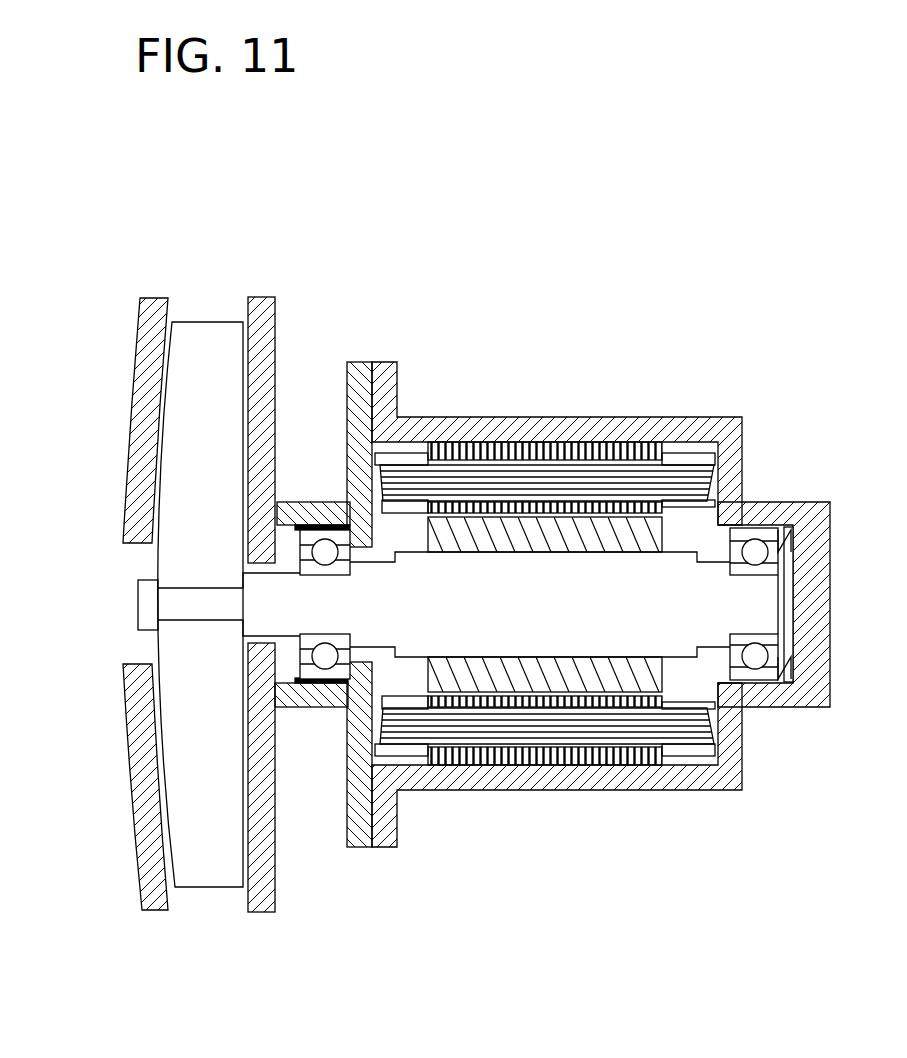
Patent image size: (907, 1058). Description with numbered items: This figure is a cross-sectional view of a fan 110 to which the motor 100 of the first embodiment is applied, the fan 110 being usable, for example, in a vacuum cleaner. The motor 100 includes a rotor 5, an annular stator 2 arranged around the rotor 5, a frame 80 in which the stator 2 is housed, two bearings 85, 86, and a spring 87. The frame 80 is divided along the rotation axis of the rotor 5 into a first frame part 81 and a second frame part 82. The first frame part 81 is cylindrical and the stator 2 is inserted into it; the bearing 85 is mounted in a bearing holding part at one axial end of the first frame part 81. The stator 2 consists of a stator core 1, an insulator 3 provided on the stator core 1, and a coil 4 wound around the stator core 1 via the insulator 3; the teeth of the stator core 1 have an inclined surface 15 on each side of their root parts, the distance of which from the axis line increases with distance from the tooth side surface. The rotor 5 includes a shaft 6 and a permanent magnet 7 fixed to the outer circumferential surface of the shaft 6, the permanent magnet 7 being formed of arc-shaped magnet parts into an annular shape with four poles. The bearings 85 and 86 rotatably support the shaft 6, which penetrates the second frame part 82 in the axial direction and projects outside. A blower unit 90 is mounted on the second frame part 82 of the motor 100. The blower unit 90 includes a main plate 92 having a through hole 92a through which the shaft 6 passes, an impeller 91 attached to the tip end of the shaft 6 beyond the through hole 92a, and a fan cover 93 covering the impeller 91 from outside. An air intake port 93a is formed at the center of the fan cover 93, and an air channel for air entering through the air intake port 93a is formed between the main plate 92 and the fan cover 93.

The stator core 1 is at (610, 440).
The stator 2 is at (742, 354).
The insulator 3 is at (672, 458).
The coil 4 is at (685, 492).
The rotor 5 is at (517, 354).
The shaft 6 is at (453, 588).
The permanent magnet 7 is at (502, 532).
The inclined surface 15 is at (560, 513).
The frame 80 is at (420, 294).
The first frame part 81 is at (383, 370).
The second frame part 82 is at (358, 362).
The bearing 85 is at (760, 533).
The bearing 86 is at (328, 523).
The spring 87 is at (787, 538).
The blower unit 90 is at (293, 247).
The impeller 91 is at (208, 340).
The main plate 92 is at (260, 313).
The through hole 92a is at (276, 645).
The fan cover 93 is at (148, 297).
The air intake port 93a is at (137, 552).
The motor 100 is at (826, 318).
The fan 110 is at (125, 197).